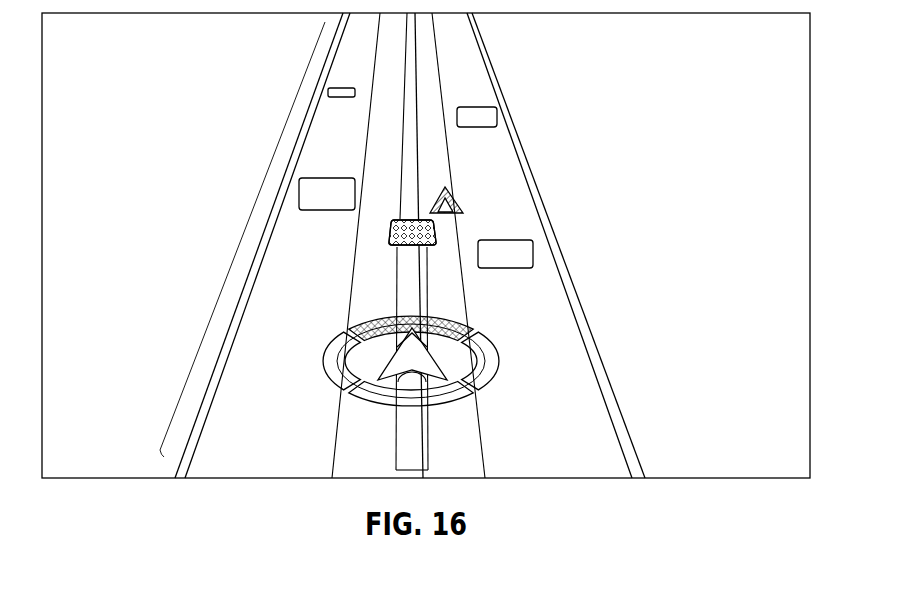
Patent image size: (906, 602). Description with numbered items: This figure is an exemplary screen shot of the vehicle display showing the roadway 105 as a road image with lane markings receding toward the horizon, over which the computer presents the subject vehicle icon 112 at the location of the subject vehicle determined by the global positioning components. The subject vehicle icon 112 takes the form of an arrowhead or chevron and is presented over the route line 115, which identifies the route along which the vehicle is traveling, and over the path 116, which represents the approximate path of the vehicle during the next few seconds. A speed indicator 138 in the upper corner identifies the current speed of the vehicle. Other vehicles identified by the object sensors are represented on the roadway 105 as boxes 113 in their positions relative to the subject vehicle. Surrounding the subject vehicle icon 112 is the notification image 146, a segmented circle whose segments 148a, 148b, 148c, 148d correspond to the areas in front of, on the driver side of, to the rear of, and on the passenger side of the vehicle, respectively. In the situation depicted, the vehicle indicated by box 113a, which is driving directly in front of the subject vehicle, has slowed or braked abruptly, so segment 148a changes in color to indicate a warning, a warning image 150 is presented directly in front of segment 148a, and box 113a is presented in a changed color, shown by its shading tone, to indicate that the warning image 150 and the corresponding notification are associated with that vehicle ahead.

The roadway 105 is at (238, 234).
The subject vehicle icon 112 is at (418, 357).
The boxes 113 is at (342, 97).
The box 113a is at (418, 229).
The route line 115 is at (412, 57).
The path 116 is at (417, 290).
The speed indicator 138 is at (785, 88).
The notification image 146 is at (404, 366).
The segment 148a is at (382, 318).
The segment 148b is at (325, 355).
The segment 148c is at (446, 403).
The segment 148d is at (496, 381).
The warning image 150 is at (452, 199).